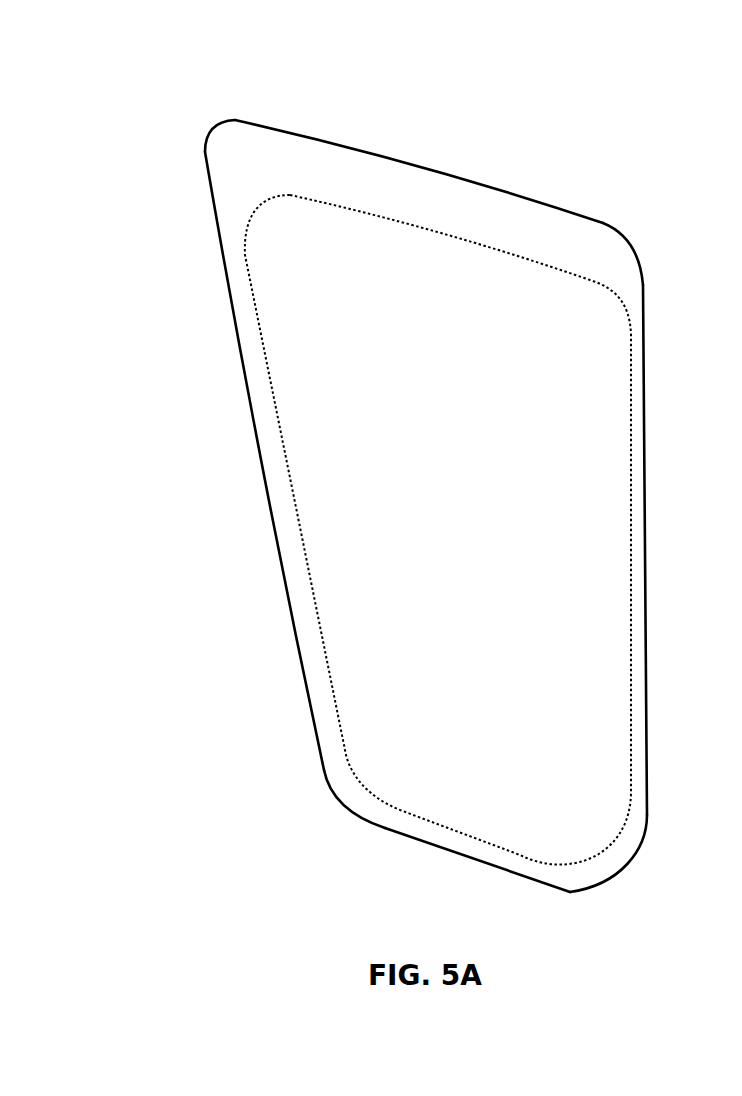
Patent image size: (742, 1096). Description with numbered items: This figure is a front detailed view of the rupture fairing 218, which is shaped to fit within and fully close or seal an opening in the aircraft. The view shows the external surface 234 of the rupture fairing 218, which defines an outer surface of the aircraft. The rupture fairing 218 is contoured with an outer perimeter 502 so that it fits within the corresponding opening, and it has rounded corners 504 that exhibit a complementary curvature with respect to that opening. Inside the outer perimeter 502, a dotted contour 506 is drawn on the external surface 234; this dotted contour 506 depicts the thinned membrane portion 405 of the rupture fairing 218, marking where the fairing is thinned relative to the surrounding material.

The rupture fairing 218 is at (573, 132).
The outer perimeter 502 is at (263, 122).
The rounded corners 504 is at (205, 150).
The dotted contour 506 is at (631, 497).
The external surface 234 is at (440, 530).
The thinned membrane portion 405 is at (438, 530).